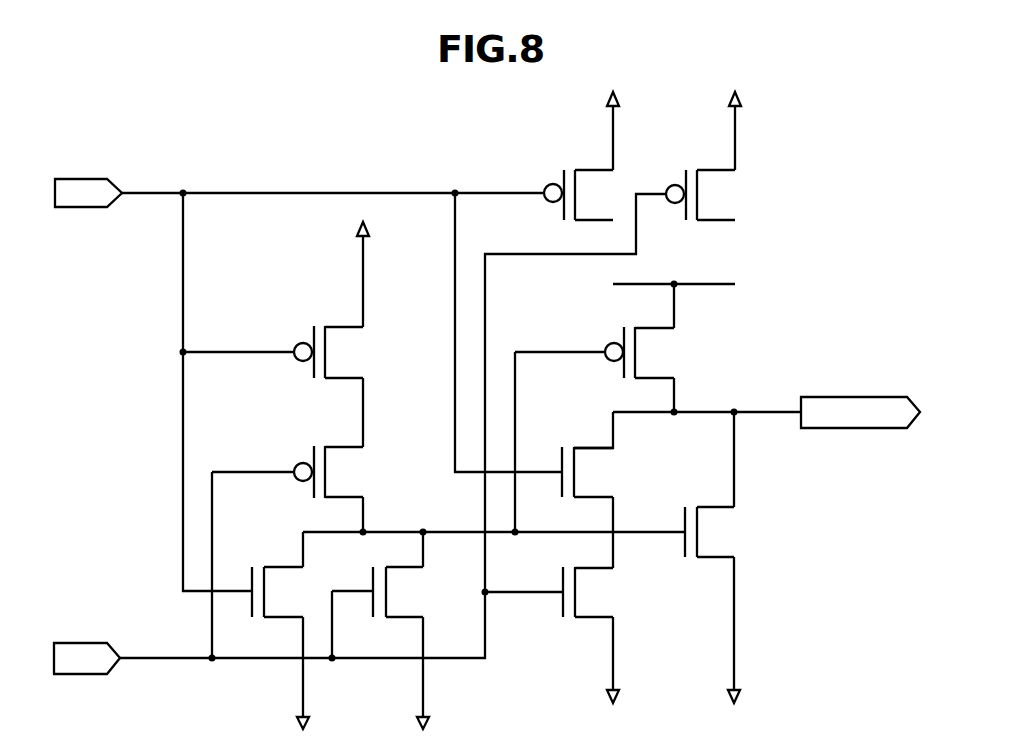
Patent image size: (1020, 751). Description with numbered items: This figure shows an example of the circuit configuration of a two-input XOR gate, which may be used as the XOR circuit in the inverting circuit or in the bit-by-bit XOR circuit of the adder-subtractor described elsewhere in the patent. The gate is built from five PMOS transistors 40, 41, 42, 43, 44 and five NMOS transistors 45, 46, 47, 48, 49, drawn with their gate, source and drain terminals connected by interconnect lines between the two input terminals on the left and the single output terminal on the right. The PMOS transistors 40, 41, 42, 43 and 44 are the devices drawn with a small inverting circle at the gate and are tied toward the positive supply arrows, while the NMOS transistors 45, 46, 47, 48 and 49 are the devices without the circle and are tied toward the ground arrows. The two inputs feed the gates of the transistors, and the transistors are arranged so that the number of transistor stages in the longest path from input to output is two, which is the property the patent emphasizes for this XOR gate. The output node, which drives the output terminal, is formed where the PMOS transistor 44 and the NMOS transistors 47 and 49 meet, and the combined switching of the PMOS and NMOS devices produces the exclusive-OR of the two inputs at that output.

The PMOS transistor 40 is at (314, 327).
The PMOS transistor 41 is at (314, 447).
The PMOS transistor 42 is at (564, 172).
The PMOS transistor 43 is at (686, 172).
The PMOS transistor 44 is at (624, 329).
The NMOS transistor 45 is at (252, 569).
The NMOS transistor 46 is at (373, 569).
The NMOS transistor 47 is at (562, 449).
The NMOS transistor 48 is at (563, 569).
The NMOS transistor 49 is at (685, 509).